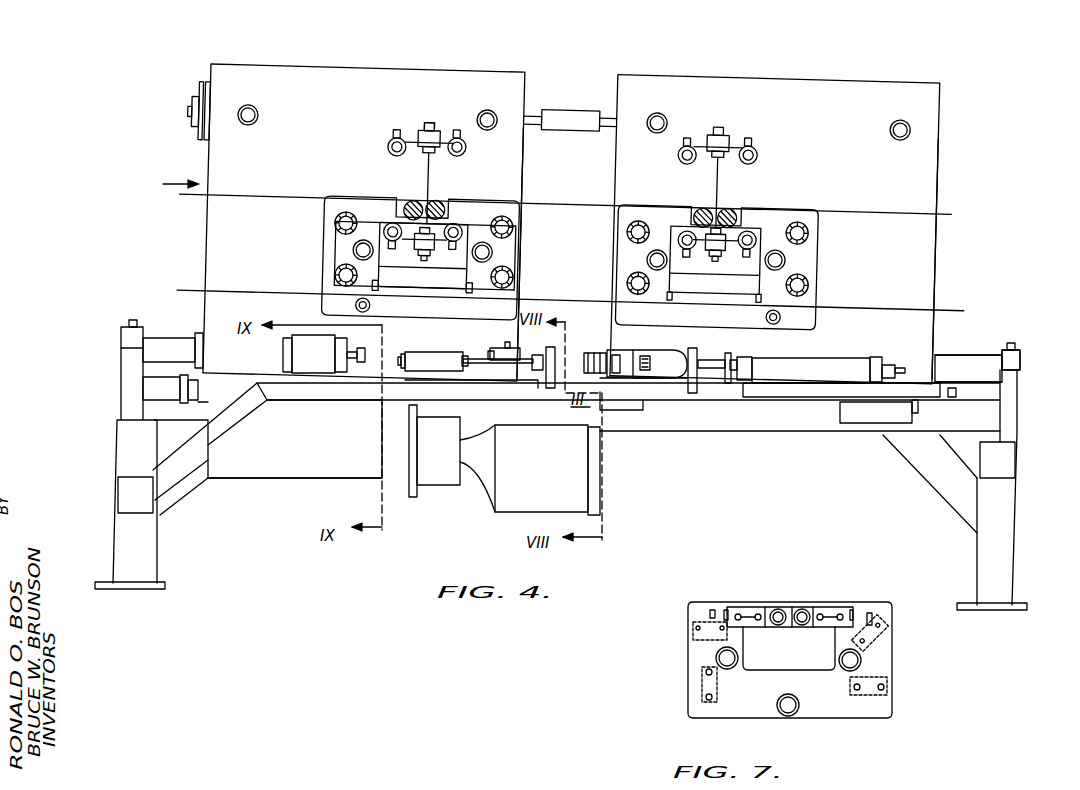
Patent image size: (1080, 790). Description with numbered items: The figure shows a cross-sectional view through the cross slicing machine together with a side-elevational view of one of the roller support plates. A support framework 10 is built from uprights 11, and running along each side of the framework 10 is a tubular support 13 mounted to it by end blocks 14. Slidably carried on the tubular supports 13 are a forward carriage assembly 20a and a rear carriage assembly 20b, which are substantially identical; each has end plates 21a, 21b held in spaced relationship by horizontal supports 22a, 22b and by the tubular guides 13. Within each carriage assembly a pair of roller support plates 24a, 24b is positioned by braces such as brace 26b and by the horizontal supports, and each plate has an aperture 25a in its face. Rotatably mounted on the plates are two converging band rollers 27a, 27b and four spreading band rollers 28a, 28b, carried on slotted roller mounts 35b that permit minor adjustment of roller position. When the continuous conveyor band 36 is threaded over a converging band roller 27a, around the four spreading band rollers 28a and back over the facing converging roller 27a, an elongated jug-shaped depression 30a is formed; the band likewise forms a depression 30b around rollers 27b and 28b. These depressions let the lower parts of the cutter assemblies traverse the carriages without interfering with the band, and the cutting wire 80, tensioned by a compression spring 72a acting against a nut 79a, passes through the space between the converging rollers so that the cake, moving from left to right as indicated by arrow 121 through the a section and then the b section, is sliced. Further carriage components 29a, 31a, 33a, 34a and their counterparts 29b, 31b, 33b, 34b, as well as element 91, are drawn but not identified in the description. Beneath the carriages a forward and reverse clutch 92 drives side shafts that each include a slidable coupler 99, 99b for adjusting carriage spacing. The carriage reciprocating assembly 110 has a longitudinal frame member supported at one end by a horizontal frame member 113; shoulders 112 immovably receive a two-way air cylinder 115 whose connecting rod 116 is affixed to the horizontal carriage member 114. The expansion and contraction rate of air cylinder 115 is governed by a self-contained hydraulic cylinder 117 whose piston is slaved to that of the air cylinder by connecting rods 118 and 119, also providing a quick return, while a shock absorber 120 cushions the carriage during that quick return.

In FIG. 4, the support framework 10 is at (150, 547).
In FIG. 4, the uprights 11 is at (112, 549).
In FIG. 4, the tubular support 13 is at (970, 356).
In FIG. 4, the end blocks 14 is at (1022, 361).
In FIG. 4, the forward carriage assembly 20a is at (433, 60).
In FIG. 4, the rear carriage assembly 20b is at (788, 76).
In FIG. 4, the end plate 21a is at (526, 180).
In FIG. 4, the end plate 21b is at (938, 281).
In FIG. 4, the horizontal supports 22a is at (258, 109).
In FIG. 4, the horizontal supports 22b is at (668, 118).
In FIG. 4, the roller support plate 24a is at (326, 308).
In FIG. 4, the roller support plate 24b is at (818, 326).
In FIG. 7, the roller support plate 24b is at (895, 718).
In FIG. 7, the aperture 25a is at (789, 648).
In FIG. 7, the brace 26b is at (790, 716).
In FIG. 4, the converging band rollers 27a is at (415, 200).
In FIG. 4, the converging band rollers 27b is at (705, 208).
In FIG. 4, the spreading band rollers 28a is at (335, 224).
In FIG. 4, the spreading band rollers 28b is at (628, 232).
In FIG. 4, the rollers / pivots 29a is at (440, 202).
In FIG. 4, the rollers / pivots 29b is at (672, 298).
In FIG. 4, the elongated jug-shaped depression 30a is at (415, 247).
In FIG. 4, the elongated jug-shaped depression 30b is at (727, 252).
In FIG. 4, the carriage first unit 31a is at (423, 257).
In FIG. 4, the carriage second unit 31b is at (715, 264).
In FIG. 4, the valve fittings 33a is at (391, 152).
In FIG. 4, the valve fittings 33b is at (678, 153).
In FIG. 4, the lower valve fittings 34a is at (385, 217).
In FIG. 4, the lower valve fittings 34b is at (688, 230).
In FIG. 7, the roller mounts 35b is at (768, 602).
In FIG. 4, the band 36 is at (880, 211).
In FIG. 4, the compression spring 72a is at (437, 126).
In FIG. 4, the nut 79a is at (427, 122).
In FIG. 4, the cutting member 80 is at (430, 178).
In FIG. 4, the motor 91 is at (552, 470).
In FIG. 4, the forward and reverse clutch 92 is at (335, 444).
In FIG. 4, the slidable coupler 99 is at (565, 118).
In FIG. 4, the slidable coupler 99b is at (719, 127).
In FIG. 4, the carriage reciprocating assembly 110 is at (587, 349).
In FIG. 4, the shoulders 112 is at (549, 392).
In FIG. 4, the horizontal frame member 113 is at (622, 410).
In FIG. 4, the horizontal carriage member 114 is at (450, 353).
In FIG. 4, the air cylinder 115 is at (635, 366).
In FIG. 4, the connecting rod 116 is at (470, 366).
In FIG. 4, the self-contained hydraulic cylinder 117 is at (796, 378).
In FIG. 4, the connecting rod 118 is at (732, 356).
In FIG. 4, the connecting rod 119 is at (736, 386).
In FIG. 4, the shock absorber 120 is at (324, 354).
In FIG. 4, the arrow 121 is at (163, 190).